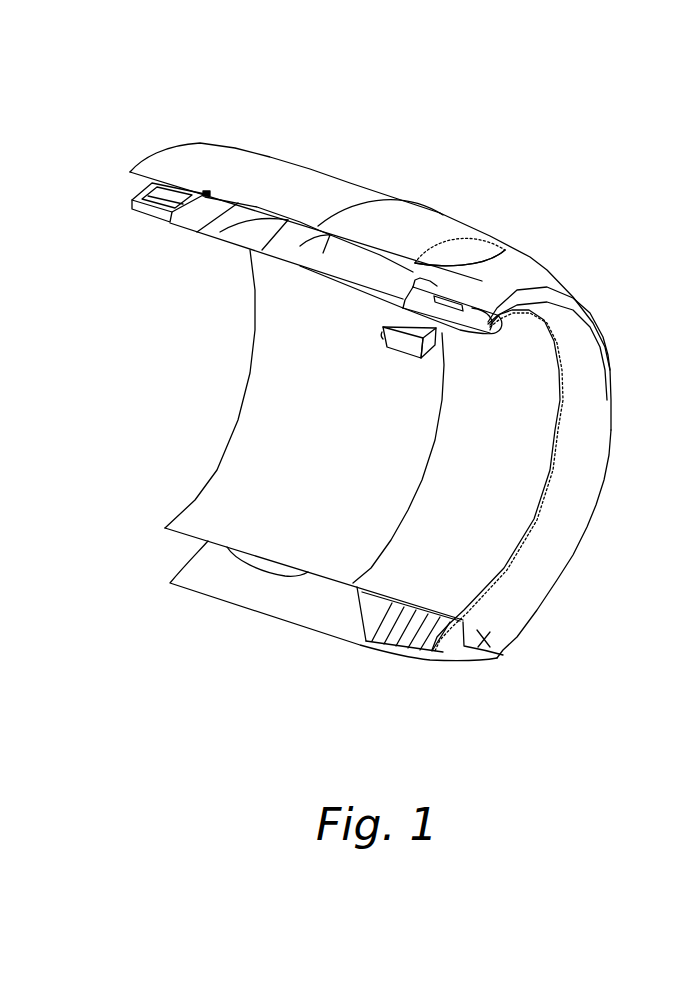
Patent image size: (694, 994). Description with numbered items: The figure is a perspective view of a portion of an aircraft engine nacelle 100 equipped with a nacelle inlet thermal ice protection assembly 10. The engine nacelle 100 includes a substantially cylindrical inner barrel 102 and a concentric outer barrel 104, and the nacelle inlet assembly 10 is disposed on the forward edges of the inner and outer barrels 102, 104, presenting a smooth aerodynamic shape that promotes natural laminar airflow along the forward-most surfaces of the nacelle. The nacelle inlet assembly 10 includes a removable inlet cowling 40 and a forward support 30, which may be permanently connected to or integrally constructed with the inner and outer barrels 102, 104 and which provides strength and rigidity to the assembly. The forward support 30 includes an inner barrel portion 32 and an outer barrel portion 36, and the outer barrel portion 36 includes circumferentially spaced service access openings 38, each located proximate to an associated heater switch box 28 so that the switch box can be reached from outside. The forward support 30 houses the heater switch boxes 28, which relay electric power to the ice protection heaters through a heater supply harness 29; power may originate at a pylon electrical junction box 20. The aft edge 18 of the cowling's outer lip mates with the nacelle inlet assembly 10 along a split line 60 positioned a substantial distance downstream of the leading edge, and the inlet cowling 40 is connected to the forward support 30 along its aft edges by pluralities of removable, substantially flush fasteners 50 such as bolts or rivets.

The aircraft engine nacelle 100 is at (510, 104).
The nacelle inlet thermal ice protection assembly 10 is at (612, 336).
The aft edge 18 is at (472, 207).
The pylon electrical junction box 20 is at (158, 217).
The ice protection electrical heater switch box 28 is at (409, 345).
The heater supply harness 29 is at (387, 324).
The forward support 30 is at (386, 548).
The inner barrel portion 32 is at (368, 266).
The outer barrel portion 36 is at (413, 225).
The service access opening 38 is at (490, 655).
The inlet cowling 40 is at (567, 527).
The removable fastener 50 is at (483, 252).
The split line 60 is at (453, 241).
The inner barrel 102 is at (235, 480).
The outer barrel 104 is at (235, 165).